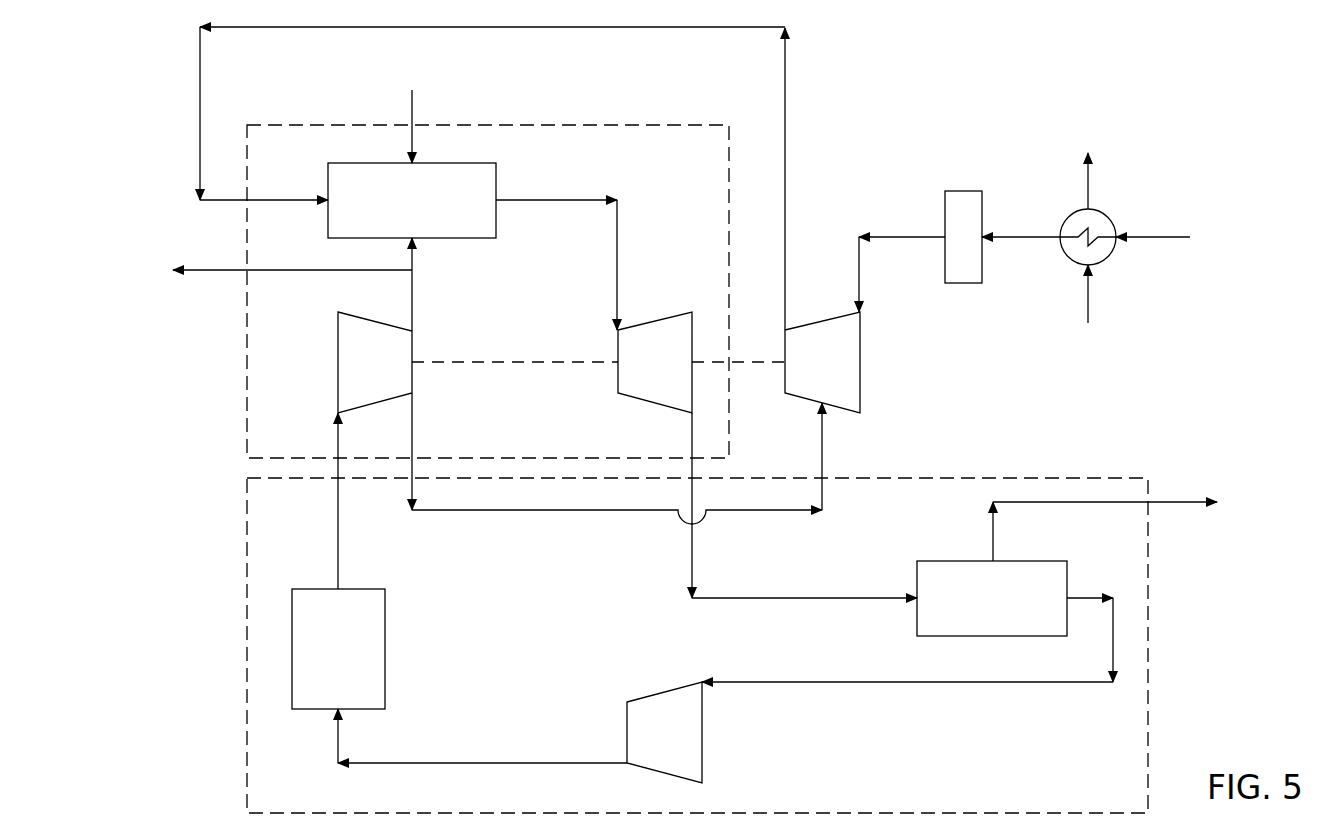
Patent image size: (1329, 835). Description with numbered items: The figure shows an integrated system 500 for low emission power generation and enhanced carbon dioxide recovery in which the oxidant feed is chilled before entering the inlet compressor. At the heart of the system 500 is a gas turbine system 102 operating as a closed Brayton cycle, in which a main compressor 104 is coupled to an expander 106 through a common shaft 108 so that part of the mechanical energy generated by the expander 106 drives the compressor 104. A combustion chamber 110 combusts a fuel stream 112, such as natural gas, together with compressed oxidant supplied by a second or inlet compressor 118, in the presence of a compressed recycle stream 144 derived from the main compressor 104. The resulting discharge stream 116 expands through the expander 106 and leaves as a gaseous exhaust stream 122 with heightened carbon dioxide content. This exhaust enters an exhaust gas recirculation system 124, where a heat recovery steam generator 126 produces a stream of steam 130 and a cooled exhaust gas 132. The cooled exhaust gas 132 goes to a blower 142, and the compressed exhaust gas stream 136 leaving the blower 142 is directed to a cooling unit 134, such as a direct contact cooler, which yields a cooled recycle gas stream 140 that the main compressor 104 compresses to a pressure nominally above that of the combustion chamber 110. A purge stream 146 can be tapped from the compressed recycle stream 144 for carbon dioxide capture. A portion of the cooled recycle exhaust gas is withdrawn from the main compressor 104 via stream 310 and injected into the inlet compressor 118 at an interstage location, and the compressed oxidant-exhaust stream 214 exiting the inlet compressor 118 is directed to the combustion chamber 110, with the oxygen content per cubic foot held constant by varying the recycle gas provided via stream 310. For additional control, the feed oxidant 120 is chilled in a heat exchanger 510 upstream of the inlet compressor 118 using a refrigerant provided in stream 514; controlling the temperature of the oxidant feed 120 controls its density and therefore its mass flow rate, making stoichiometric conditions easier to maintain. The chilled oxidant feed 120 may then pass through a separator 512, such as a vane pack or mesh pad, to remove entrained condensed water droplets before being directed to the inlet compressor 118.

The gas turbine system 102 is at (675, 112).
The main compressor 104 is at (356, 371).
The expander 106 is at (640, 371).
The common shaft 108 is at (510, 362).
The combustion chamber 110 is at (395, 209).
The fuel stream 112 is at (413, 106).
The discharge stream 116 is at (537, 200).
The inlet compressor 118 is at (806, 371).
The feed oxidant 120 is at (1170, 240).
The gaseous exhaust stream 122 is at (790, 598).
The exhaust gas recirculation system 124 is at (233, 603).
The heat recovery steam generator 126 is at (976, 607).
The steam 130 is at (1177, 500).
The cooled exhaust gas 132 is at (965, 683).
The cooling unit 134 is at (323, 659).
The compressed exhaust gas stream 136 is at (445, 763).
The cooled recycle gas stream 140 is at (338, 548).
The blower 142 is at (646, 746).
The compressed recycle stream 144 is at (412, 292).
The purge stream 146 is at (208, 272).
The compressed oxidant-exhaust stream 214 is at (200, 85).
The stream 310 is at (530, 512).
The system 500 is at (972, 63).
The heat exchanger 510 is at (1110, 205).
The separator 512 is at (960, 190).
The refrigerant stream 514 is at (1093, 312).